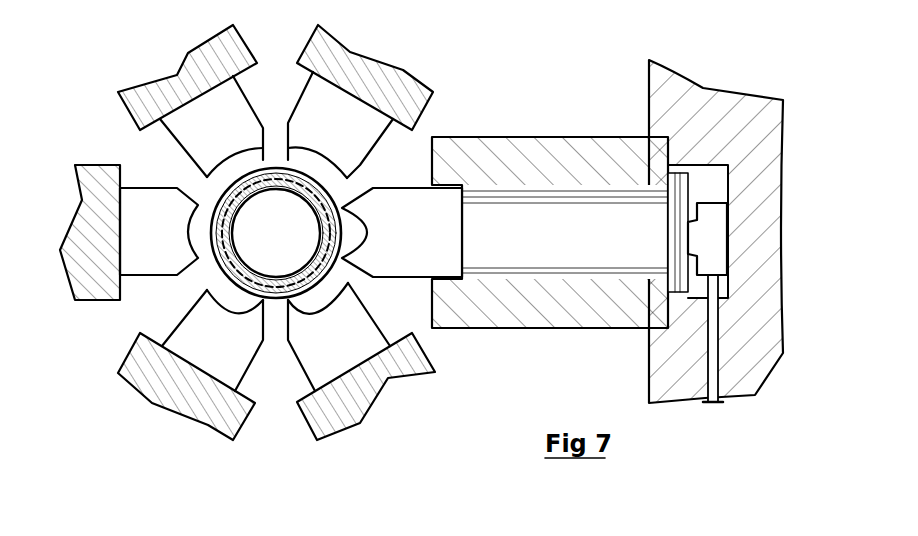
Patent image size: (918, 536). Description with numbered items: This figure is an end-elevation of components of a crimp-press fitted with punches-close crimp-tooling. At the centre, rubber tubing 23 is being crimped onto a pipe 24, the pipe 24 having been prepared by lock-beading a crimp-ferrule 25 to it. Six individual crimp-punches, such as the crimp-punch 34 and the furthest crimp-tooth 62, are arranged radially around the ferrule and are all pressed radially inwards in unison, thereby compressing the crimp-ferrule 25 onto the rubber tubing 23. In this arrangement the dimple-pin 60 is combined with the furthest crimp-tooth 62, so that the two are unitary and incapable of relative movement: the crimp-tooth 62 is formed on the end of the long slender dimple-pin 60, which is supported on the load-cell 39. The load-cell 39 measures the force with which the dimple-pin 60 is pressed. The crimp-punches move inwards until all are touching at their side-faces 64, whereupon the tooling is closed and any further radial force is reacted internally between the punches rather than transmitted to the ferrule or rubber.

The rubber tubing 23 is at (190, 287).
The pipe 24 is at (235, 228).
The crimp-ferrule 25 is at (205, 185).
The crimp-punch 34 is at (90, 232).
The load-cell 39 is at (715, 225).
The dimple-pin 60 is at (603, 238).
The crimp-tooth 62 is at (378, 218).
The side-faces 64 is at (275, 298).